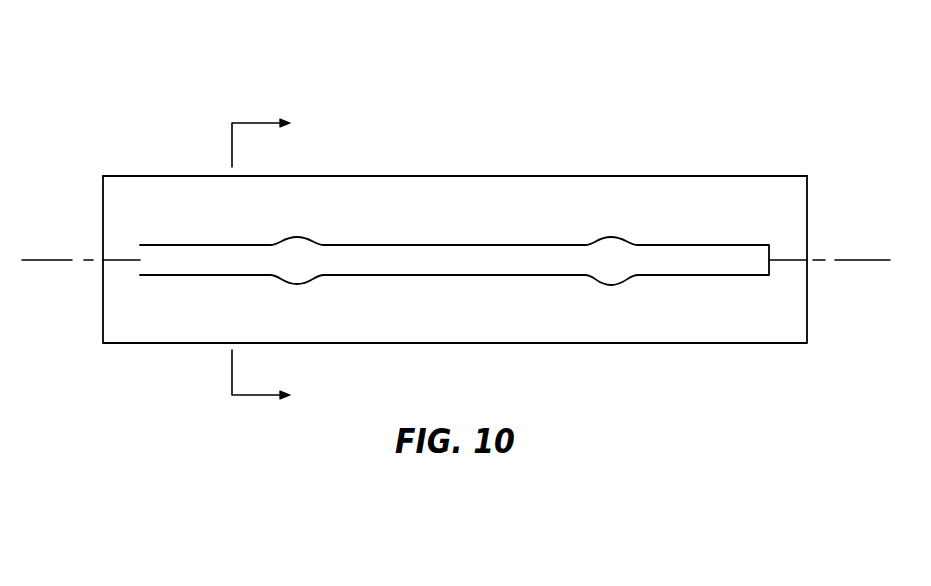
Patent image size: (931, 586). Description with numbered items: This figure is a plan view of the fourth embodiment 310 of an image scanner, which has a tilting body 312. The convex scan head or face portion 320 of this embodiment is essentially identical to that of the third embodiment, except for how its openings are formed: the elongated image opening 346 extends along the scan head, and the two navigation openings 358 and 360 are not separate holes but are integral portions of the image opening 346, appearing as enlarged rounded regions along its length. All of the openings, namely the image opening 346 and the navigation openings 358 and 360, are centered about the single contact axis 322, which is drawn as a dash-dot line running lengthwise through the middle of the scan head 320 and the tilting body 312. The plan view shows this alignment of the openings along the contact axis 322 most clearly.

The fourth embodiment of an image scanner 310 is at (174, 72).
The tilting body 312 is at (734, 160).
The convex scan head or face portion 320 is at (568, 175).
The single contact axis 322 is at (60, 258).
The image opening 346 is at (455, 245).
The navigation opening 358 is at (297, 237).
The navigation opening 360 is at (611, 237).